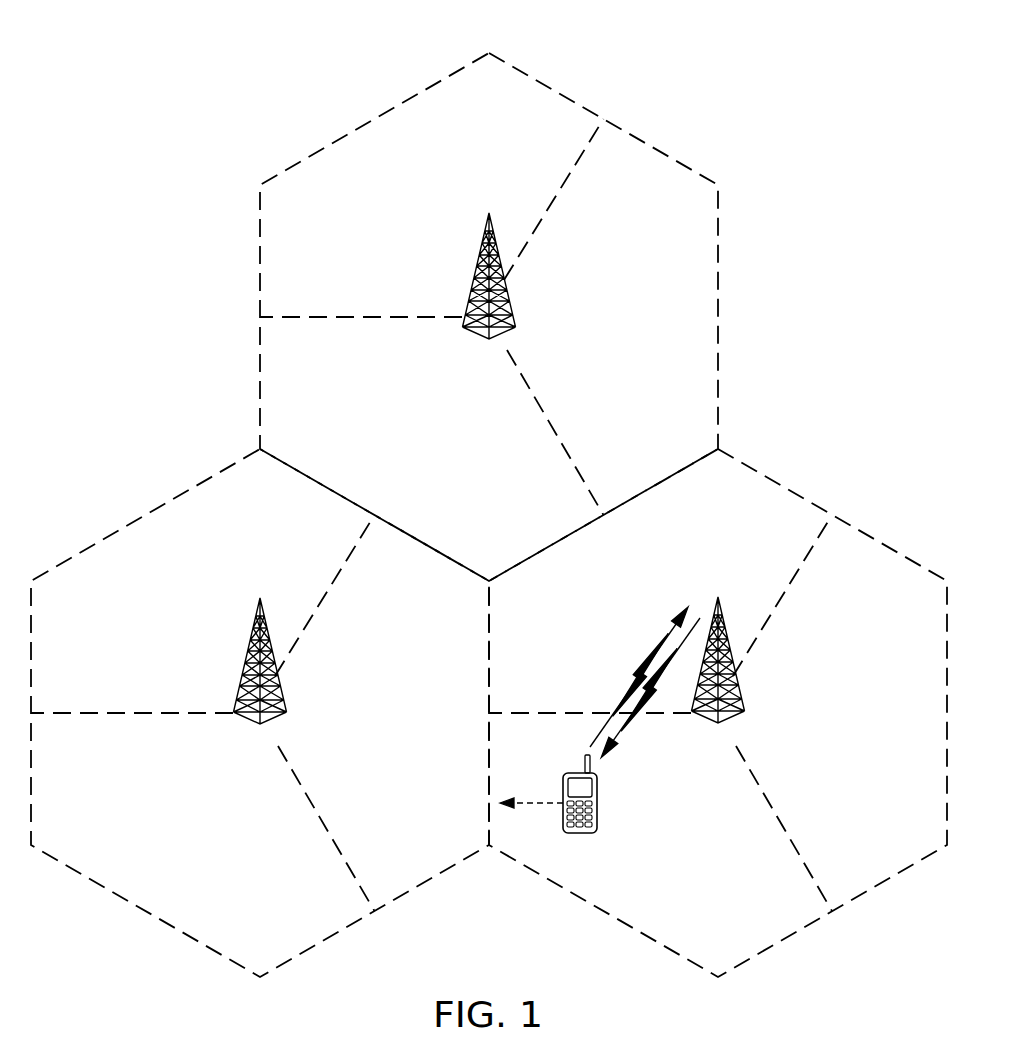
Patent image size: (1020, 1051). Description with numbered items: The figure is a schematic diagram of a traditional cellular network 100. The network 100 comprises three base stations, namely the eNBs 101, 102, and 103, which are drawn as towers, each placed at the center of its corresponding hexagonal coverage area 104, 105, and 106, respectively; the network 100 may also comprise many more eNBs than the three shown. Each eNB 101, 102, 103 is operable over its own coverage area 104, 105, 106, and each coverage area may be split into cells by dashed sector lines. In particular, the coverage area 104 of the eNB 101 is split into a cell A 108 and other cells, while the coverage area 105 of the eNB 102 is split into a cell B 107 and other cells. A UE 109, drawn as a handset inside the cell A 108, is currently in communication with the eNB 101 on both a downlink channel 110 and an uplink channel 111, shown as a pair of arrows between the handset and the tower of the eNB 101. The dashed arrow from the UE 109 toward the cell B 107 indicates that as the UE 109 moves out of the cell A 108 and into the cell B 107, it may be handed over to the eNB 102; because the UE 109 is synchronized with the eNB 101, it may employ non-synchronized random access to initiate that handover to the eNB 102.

The cellular network 100 is at (259, 61).
The eNB 101 is at (742, 697).
The eNB 102 is at (245, 661).
The eNB 103 is at (474, 280).
The coverage area 104 is at (820, 916).
The coverage area 105 is at (157, 918).
The coverage area 106 is at (640, 140).
The cell B 107 is at (420, 747).
The cell A 108 is at (746, 933).
The UE 109 is at (600, 815).
The downlink channel 110 is at (623, 730).
The uplink channel 111 is at (655, 646).